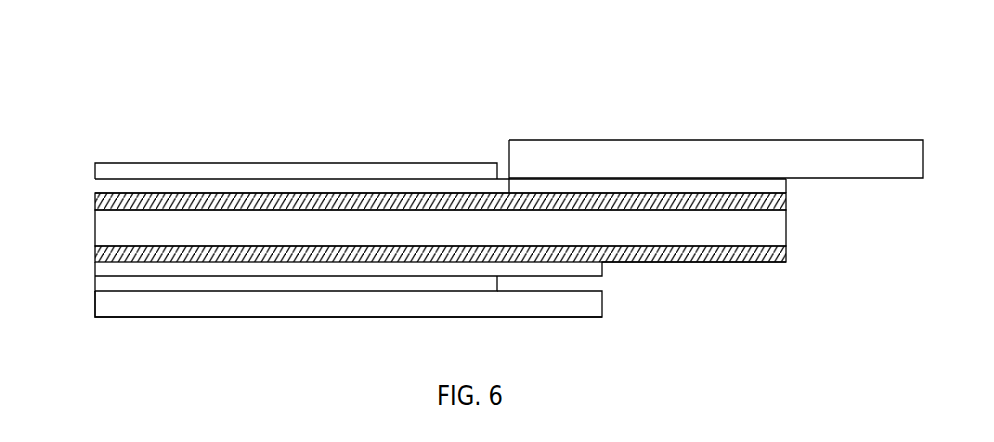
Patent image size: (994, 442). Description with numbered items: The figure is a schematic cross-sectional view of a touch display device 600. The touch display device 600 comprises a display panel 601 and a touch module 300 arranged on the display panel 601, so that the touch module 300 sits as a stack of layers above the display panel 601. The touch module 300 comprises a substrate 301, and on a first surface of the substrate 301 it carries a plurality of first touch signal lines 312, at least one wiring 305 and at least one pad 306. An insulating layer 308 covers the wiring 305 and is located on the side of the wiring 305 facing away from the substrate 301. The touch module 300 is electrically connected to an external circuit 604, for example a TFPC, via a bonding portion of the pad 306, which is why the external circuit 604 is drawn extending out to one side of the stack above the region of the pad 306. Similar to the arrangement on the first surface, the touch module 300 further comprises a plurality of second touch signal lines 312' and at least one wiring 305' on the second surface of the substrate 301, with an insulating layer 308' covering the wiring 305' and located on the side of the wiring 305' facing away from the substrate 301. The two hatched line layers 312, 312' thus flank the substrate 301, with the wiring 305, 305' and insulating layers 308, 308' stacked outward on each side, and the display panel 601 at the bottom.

The touch display device 600 is at (72, 33).
The touch module 300 is at (95, 170).
The substrate 301 is at (440, 229).
The first touch signal lines 312 is at (440, 144).
The wiring 305 is at (440, 135).
The insulating layer 308 is at (296, 128).
The pad 306 is at (588, 185).
The external circuit 604 is at (712, 160).
The second touch signal lines 312' is at (440, 302).
The wiring 305' is at (296, 313).
The insulating layer 308' is at (348, 321).
The display panel 601 is at (140, 308).